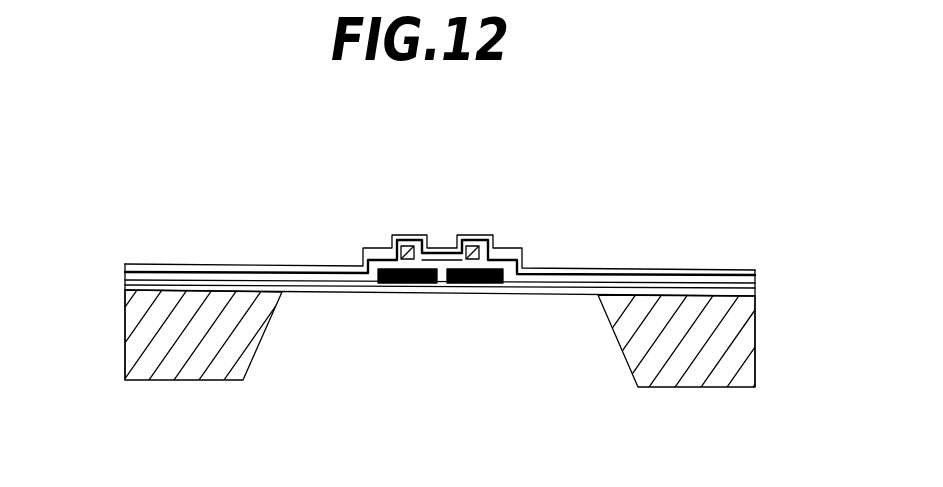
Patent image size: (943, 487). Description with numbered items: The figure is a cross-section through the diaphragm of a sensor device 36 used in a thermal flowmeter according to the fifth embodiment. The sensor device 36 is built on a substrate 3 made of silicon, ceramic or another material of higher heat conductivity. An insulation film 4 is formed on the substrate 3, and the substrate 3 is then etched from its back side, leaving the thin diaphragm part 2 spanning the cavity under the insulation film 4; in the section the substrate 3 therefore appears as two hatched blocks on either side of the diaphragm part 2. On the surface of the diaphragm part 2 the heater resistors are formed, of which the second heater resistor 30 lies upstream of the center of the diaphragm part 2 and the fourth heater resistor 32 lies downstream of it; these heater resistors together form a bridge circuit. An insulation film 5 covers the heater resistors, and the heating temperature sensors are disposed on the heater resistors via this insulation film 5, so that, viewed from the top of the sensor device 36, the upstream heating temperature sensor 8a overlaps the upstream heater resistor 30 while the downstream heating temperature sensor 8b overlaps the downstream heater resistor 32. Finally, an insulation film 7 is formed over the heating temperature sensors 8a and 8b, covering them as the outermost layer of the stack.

The diaphragm part 2 is at (545, 383).
The substrate 3 is at (750, 348).
The insulation film 4 is at (756, 295).
The insulation film 5 is at (756, 282).
The insulation film 7 is at (756, 271).
The sensor device 36 is at (124, 267).
The upstream heating temperature sensor 8a is at (411, 245).
The downstream heating temperature sensor 8b is at (476, 245).
The second heater resistor 30 is at (405, 283).
The fourth heater resistor 32 is at (473, 283).